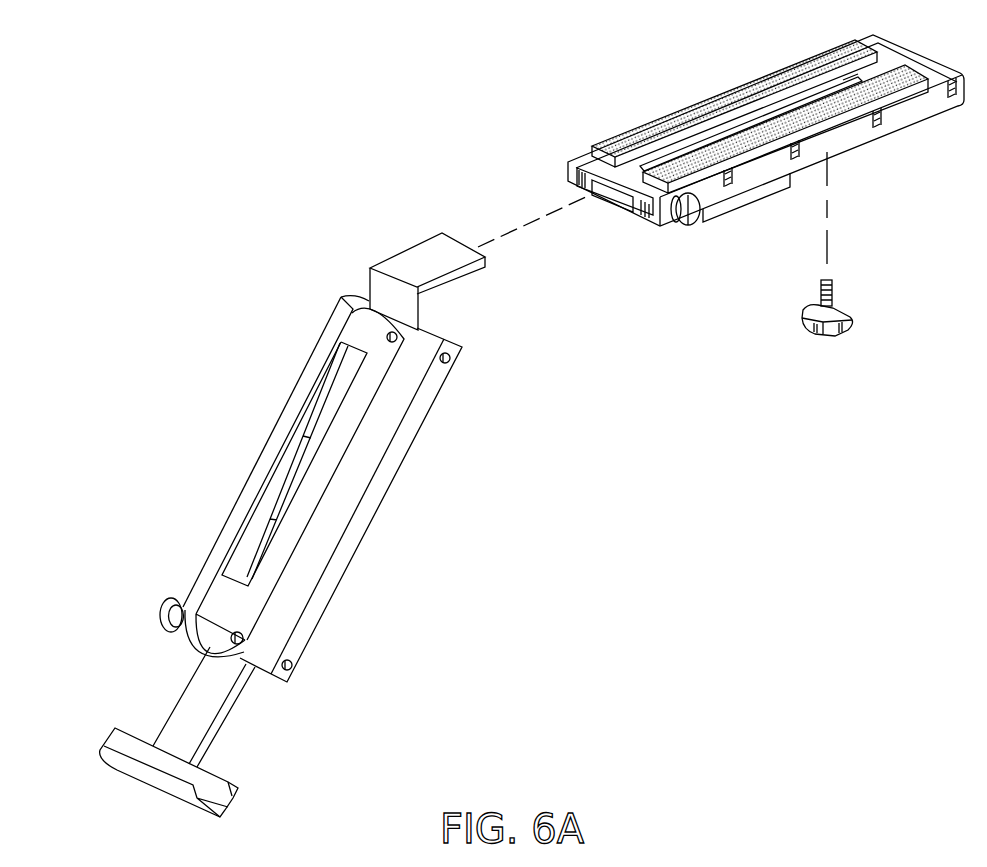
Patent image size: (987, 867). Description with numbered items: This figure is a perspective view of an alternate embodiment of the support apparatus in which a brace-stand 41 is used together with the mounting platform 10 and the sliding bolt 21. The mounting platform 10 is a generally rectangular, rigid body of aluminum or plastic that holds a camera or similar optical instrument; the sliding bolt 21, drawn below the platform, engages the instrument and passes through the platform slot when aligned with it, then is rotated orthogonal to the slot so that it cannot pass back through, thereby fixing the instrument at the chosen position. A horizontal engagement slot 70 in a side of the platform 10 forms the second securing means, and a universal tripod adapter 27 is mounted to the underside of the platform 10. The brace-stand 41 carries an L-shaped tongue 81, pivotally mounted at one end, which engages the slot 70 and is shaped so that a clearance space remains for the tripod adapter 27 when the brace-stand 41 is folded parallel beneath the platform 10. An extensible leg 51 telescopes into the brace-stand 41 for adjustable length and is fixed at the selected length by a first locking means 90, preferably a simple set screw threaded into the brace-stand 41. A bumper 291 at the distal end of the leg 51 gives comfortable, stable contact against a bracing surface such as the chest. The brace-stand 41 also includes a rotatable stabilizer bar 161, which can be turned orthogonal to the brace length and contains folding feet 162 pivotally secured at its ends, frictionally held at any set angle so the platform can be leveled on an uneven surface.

The mounting platform 10 is at (905, 146).
The sliding bolt 21 is at (850, 333).
The universal tripod adapter 27 is at (730, 210).
The brace-stand 41 is at (381, 530).
The extensible leg 51 is at (227, 717).
The horizontal engagement slot 70 is at (618, 196).
The L-shaped tongue 81 is at (412, 250).
The first locking means 90 is at (163, 607).
The stabilizer bar 161 is at (370, 388).
The folding feet 162 is at (240, 563).
The bumper 291 is at (100, 748).